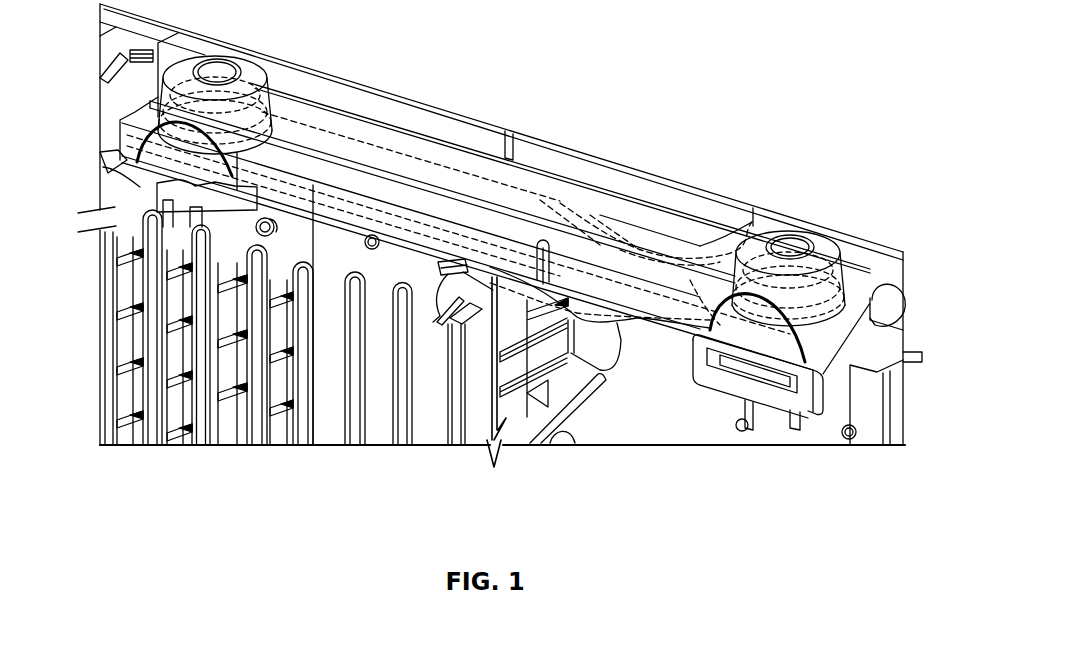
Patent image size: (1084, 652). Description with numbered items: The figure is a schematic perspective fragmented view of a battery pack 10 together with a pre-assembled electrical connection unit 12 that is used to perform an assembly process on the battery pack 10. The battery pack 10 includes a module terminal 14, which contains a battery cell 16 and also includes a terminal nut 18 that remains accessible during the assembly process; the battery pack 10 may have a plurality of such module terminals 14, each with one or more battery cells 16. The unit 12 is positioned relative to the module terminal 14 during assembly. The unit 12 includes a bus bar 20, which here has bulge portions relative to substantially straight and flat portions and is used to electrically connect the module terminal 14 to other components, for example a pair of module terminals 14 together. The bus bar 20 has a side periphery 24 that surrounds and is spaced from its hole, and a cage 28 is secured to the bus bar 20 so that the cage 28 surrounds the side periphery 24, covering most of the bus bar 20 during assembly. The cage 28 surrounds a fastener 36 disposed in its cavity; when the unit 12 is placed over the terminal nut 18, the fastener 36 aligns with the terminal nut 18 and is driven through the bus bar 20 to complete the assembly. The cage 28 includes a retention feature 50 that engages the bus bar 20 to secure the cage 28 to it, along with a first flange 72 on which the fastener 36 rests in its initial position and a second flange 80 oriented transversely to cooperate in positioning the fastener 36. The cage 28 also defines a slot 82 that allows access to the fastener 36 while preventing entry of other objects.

The battery pack 10 is at (752, 72).
The pre-assembled electrical connection unit 12 is at (553, 163).
The module terminal 14 is at (886, 320).
The battery cell 16 is at (330, 447).
The terminal nut 18 is at (110, 169).
The bus bar 20 is at (730, 228).
The side periphery 24 is at (676, 322).
The cage 28 is at (640, 210).
The fastener 36 is at (342, 80).
The retention feature 50 is at (551, 232).
The first flange 72 is at (138, 107).
The second flange 80 is at (282, 52).
The slot 82 is at (221, 63).